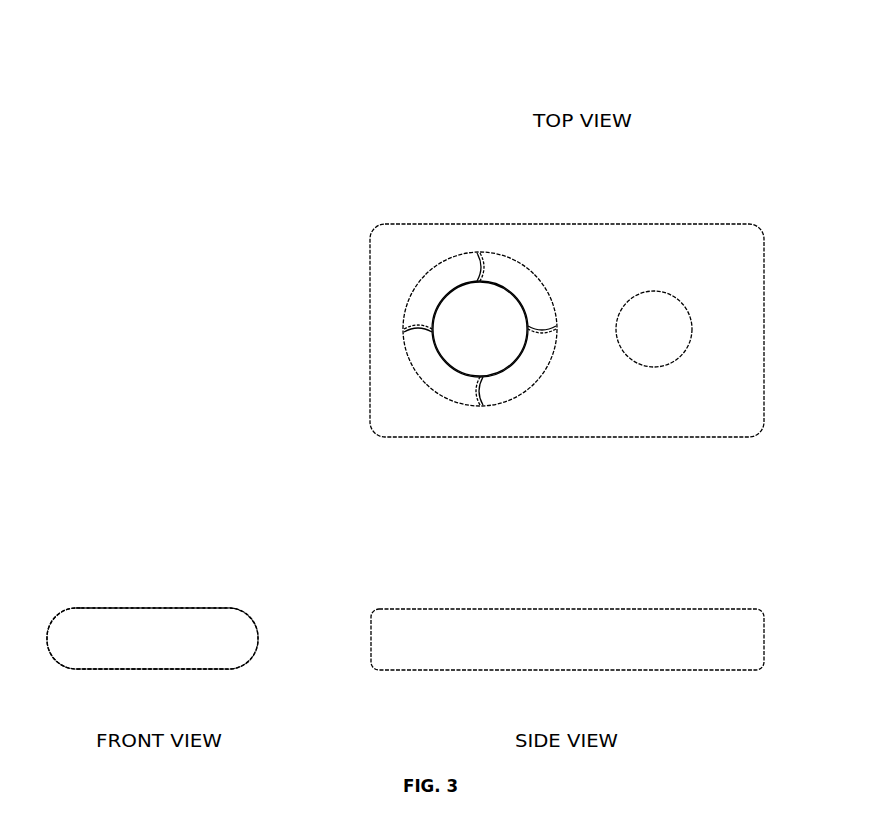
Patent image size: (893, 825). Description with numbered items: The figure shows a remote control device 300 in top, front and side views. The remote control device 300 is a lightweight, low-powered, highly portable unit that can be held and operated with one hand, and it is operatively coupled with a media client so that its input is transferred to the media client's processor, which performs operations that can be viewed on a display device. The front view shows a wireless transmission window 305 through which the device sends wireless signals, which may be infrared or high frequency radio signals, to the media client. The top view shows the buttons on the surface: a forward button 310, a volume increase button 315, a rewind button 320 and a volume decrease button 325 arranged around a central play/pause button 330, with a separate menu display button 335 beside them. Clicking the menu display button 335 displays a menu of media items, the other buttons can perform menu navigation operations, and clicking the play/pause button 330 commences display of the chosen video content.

The remote control device 300 is at (776, 61).
The wireless transmission window 305 is at (159, 620).
The forward button 310 is at (478, 271).
The volume increase button 315 is at (406, 330).
The rewind button 320 is at (478, 391).
The volume decrease button 325 is at (542, 338).
The play/pause button 330 is at (476, 329).
The menu display button 335 is at (657, 345).